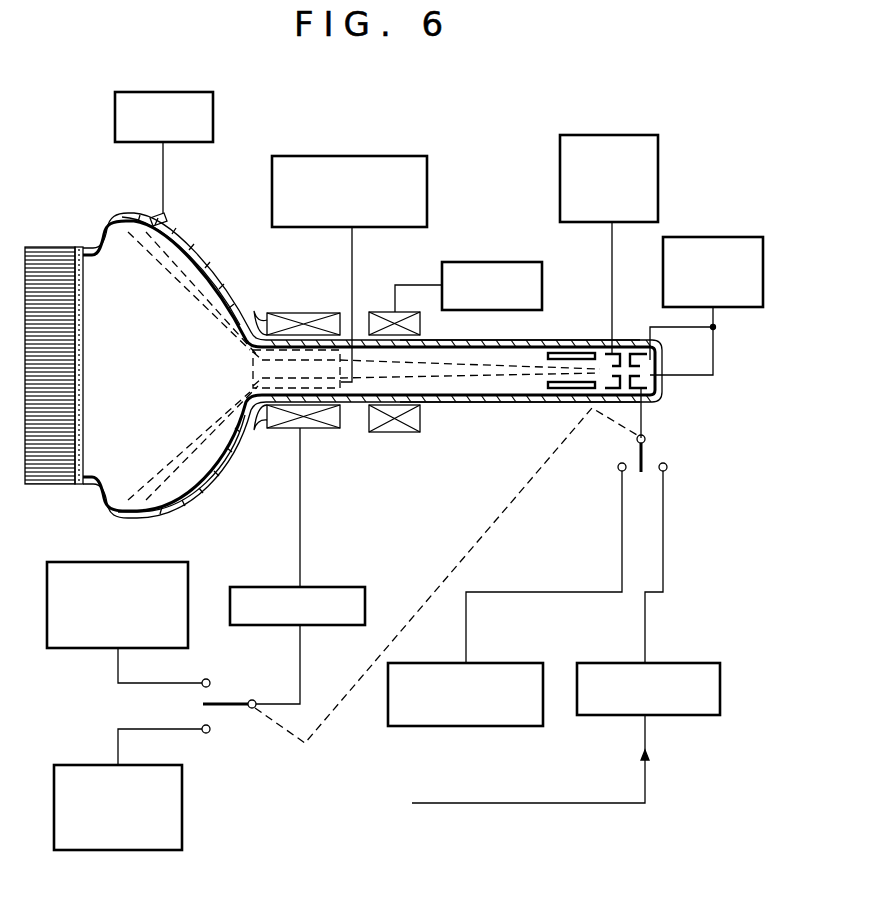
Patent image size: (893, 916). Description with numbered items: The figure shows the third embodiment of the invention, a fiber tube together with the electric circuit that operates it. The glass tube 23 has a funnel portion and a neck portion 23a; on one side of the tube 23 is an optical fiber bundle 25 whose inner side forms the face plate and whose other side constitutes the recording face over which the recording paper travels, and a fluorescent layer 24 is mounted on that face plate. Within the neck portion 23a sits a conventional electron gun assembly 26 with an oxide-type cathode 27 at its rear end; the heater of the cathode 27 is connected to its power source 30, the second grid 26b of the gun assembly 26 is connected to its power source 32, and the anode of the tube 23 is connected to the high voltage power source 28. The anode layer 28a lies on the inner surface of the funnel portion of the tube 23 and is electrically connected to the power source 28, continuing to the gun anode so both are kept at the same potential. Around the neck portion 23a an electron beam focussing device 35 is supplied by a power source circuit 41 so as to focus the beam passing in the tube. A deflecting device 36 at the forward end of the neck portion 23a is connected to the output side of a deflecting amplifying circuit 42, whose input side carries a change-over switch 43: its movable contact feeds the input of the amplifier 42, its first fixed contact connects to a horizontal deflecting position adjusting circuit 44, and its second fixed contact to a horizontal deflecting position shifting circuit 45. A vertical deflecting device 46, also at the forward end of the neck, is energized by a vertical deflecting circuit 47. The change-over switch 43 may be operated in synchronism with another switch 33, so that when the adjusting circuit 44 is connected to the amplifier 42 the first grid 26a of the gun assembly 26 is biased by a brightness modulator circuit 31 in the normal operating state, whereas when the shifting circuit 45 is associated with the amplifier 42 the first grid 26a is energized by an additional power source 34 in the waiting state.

The tube 23 is at (232, 284).
The neck portion 23a is at (529, 402).
The fluorescent layer 24 is at (82, 381).
The optical fiber bundle 25 is at (46, 245).
The electron gun assembly 26 is at (607, 356).
The first grid 26a is at (655, 390).
The second grid 26b is at (619, 348).
The cathode 27 is at (652, 364).
The high voltage power source 28 is at (214, 117).
The anode layer 28a is at (213, 253).
The heater power source 30 is at (765, 266).
The brightness modulator circuit 31 is at (687, 716).
The second grid power source 32 is at (660, 175).
The switch 33 is at (645, 466).
The additional power source 34 is at (477, 726).
The electron beam focussing device 35 is at (394, 432).
The deflecting device 36 is at (299, 313).
The power source circuit 41 is at (543, 284).
The deflecting amplifying circuit 42 is at (328, 626).
The change-over switch 43 is at (219, 710).
The horizontal deflecting position adjusting circuit 44 is at (74, 649).
The horizontal deflecting position shifting circuit 45 is at (76, 764).
The vertical deflecting device 46 is at (252, 375).
The vertical deflecting circuit 47 is at (429, 186).